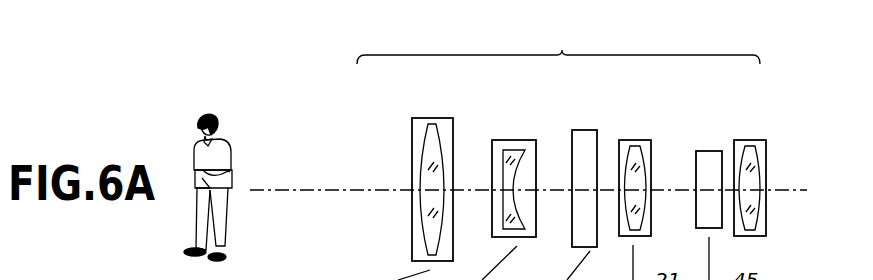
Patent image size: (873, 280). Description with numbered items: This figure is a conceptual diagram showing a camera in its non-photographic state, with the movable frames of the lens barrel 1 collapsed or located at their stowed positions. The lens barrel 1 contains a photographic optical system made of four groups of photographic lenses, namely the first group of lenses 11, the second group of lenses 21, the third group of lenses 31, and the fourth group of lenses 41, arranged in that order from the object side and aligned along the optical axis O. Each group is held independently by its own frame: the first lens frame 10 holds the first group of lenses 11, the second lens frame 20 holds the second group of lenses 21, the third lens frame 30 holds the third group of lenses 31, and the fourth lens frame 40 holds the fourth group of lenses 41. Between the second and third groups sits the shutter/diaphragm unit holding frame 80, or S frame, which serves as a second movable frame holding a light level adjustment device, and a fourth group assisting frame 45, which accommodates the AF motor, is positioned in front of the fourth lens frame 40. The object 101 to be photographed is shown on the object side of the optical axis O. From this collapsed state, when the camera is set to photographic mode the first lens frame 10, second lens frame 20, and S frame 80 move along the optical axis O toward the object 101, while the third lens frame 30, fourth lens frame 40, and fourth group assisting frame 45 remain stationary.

The lens barrel 1 is at (558, 40).
The first lens frame 10 is at (434, 118).
The first group of lenses 11 is at (422, 156).
The second lens frame 20 is at (526, 141).
The second group of lenses 21 is at (510, 150).
The shutter/diaphragm unit holding frame 80 is at (583, 133).
The third lens frame 30 is at (653, 153).
The third group of lenses 31 is at (630, 145).
The fourth group assisting frame 45 is at (710, 155).
The fourth lens frame 40 is at (767, 205).
The fourth group of lenses 41 is at (757, 155).
The optical axis O is at (788, 190).
The object 101 is at (218, 118).